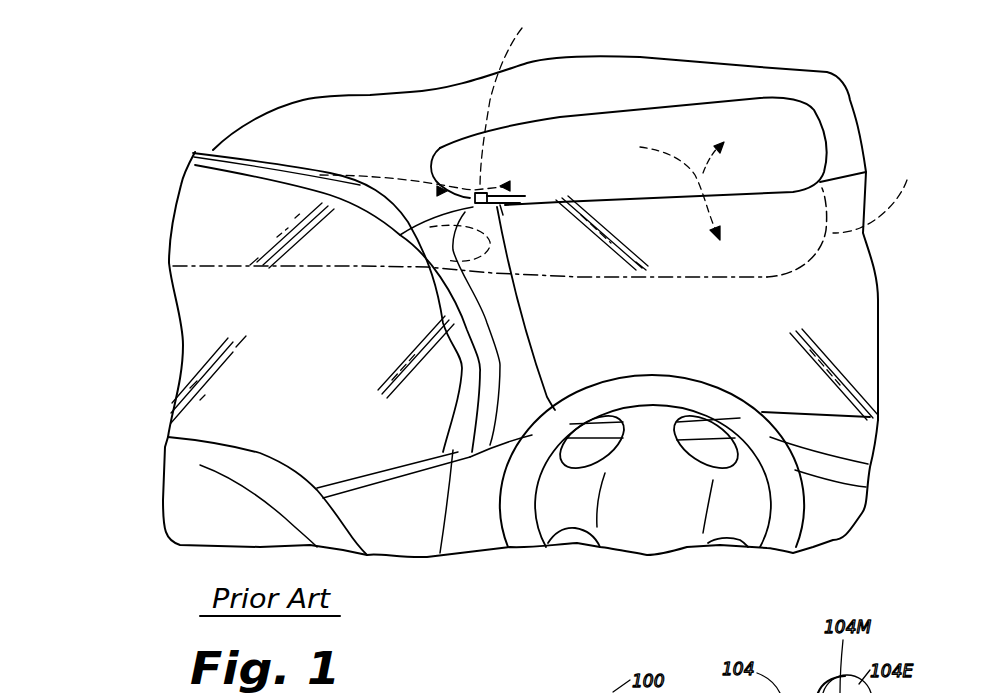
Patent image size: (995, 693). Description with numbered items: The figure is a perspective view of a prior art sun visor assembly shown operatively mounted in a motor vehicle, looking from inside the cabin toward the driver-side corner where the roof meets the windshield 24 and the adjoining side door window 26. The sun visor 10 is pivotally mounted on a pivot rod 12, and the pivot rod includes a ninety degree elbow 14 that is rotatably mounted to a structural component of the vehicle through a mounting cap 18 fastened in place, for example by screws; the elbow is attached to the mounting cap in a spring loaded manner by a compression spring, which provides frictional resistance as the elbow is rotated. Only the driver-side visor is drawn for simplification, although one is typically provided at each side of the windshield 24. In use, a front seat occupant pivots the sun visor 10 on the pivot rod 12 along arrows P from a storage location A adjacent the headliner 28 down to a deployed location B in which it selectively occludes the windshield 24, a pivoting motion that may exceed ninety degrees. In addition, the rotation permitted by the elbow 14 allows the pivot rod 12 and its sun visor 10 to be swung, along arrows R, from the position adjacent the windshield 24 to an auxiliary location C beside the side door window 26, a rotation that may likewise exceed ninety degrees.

The sun visor 10 is at (693, 103).
The pivot rod 12 is at (505, 212).
The ninety degree elbow 14 is at (425, 255).
The mounting cap 18 is at (473, 199).
The windshield 24 is at (632, 343).
The side door window 26 is at (311, 386).
The headliner 28 is at (543, 80).
The storage location A is at (805, 107).
The deployed location B is at (875, 197).
The auxiliary location C is at (360, 275).
The arrows P is at (673, 188).
The arrows R is at (510, 105).